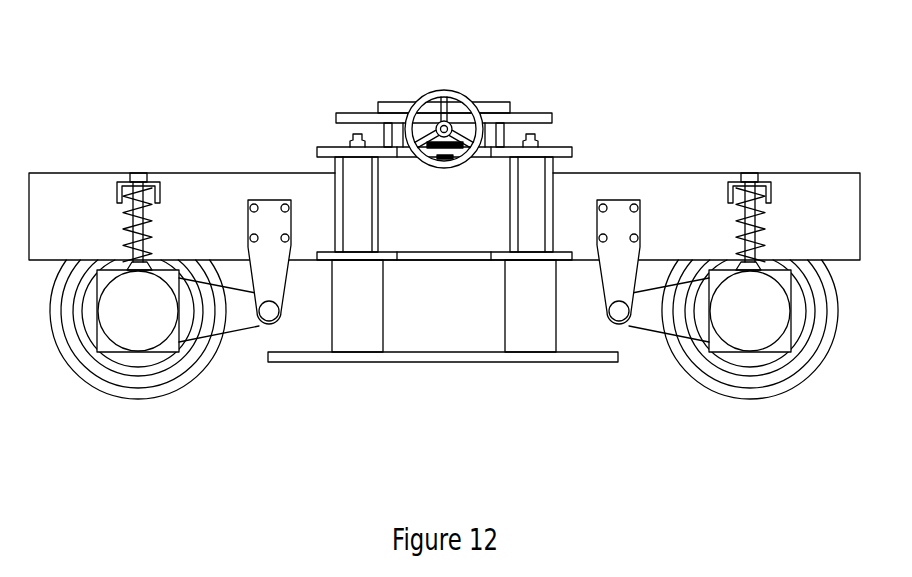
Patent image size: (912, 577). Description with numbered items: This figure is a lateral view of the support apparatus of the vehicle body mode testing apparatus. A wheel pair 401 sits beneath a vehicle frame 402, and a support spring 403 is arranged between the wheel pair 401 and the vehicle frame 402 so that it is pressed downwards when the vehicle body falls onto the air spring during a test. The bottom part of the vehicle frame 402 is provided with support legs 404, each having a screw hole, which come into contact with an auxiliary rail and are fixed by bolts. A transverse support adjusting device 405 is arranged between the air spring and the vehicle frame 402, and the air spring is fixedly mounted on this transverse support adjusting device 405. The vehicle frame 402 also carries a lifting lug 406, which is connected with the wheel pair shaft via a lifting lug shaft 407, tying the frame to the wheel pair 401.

The wheel pair 401 is at (138, 311).
The vehicle frame 402 is at (357, 207).
The support spring 403 is at (140, 190).
The support legs 404 is at (517, 355).
The transverse support adjusting device 405 is at (353, 120).
The lifting lug 406 is at (618, 282).
The lifting lug shaft 407 is at (232, 313).